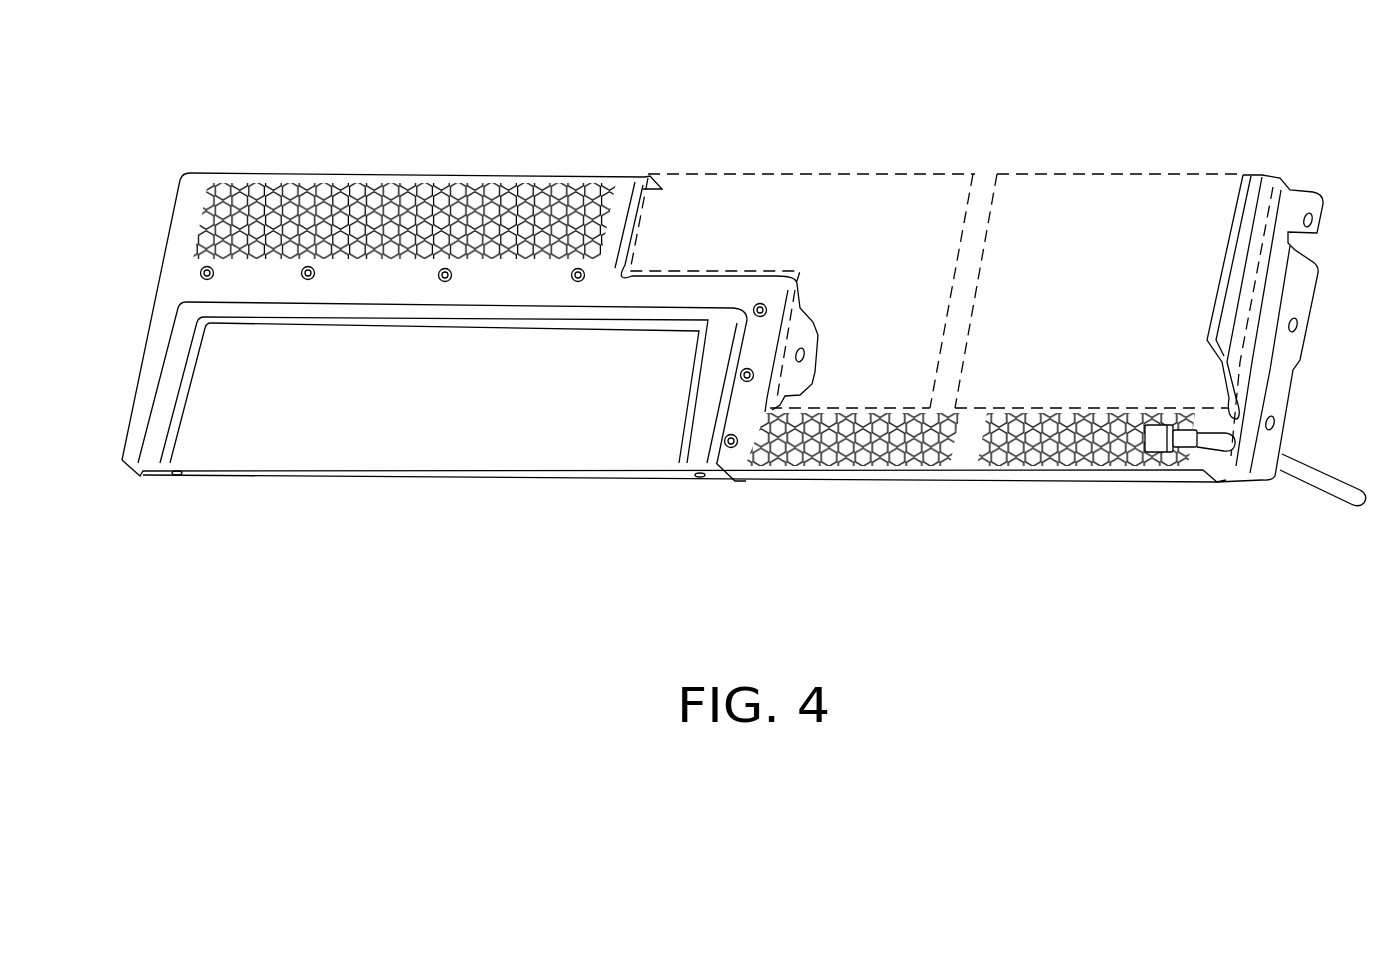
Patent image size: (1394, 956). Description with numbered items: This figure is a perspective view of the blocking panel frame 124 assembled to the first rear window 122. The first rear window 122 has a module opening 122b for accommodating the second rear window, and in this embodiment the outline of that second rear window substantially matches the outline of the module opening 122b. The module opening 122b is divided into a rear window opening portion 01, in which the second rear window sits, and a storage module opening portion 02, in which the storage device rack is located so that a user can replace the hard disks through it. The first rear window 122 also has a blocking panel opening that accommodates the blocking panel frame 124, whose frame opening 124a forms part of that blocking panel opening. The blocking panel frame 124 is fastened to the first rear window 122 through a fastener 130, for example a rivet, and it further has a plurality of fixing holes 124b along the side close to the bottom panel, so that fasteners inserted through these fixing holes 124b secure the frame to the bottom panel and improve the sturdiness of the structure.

The blocking panel frame 124 is at (698, 453).
The frame opening 124a is at (497, 398).
The fixing holes 124b is at (176, 480).
The fastener 130 is at (200, 274).
The first rear window 122 is at (1133, 462).
The module opening 122b is at (989, 151).
The rear window opening portion 01 is at (840, 236).
The storage module opening portion 02 is at (1102, 236).